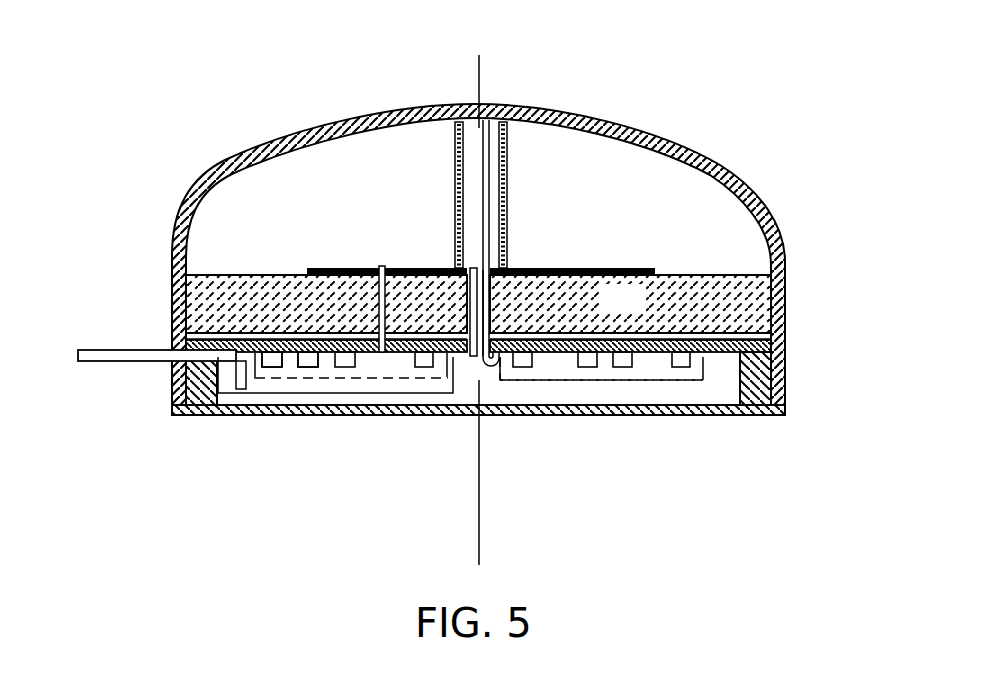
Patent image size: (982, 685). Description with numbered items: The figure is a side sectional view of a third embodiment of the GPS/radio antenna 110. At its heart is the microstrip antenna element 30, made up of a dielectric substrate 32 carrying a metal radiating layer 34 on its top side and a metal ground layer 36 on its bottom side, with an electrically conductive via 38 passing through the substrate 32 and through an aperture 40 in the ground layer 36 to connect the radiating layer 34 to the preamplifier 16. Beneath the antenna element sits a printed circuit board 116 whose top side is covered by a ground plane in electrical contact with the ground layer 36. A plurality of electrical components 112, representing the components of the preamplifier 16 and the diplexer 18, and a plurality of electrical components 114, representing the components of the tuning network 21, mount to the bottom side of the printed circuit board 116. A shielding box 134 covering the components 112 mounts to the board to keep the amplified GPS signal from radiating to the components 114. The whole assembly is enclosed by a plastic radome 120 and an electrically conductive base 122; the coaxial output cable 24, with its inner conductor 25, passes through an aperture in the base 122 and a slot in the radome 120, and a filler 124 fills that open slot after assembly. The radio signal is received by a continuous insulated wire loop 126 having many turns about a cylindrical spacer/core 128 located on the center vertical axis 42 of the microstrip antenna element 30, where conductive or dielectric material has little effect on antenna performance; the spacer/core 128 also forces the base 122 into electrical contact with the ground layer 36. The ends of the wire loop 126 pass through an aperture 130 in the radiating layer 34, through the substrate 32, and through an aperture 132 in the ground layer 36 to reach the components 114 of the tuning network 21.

The GPS/radio antenna 110 is at (783, 108).
The plastic radome 120 is at (197, 188).
The electrically conductive base 122 is at (195, 415).
The filler 124 is at (170, 397).
The microstrip antenna element 30 is at (788, 270).
The dielectric substrate 32 is at (640, 311).
The metal ground layer 36 is at (788, 310).
The printed circuit board 116 is at (770, 355).
The metal radiating layer 34 is at (340, 270).
The electrically conductive via 38 is at (313, 267).
The aperture 40 is at (382, 308).
The cylindrical spacer/core 128 is at (460, 137).
The insulated wire loop 126 is at (530, 108).
The aperture 130 is at (502, 250).
The aperture 132 is at (519, 286).
The coaxial output cable 24 is at (125, 363).
The inner conductor 25 is at (240, 362).
The shielding box 134 is at (433, 393).
The electrical components 112 is at (420, 367).
The preamplifier 16 is at (276, 367).
The diplexer 18 is at (308, 359).
The electrical components 114 is at (680, 373).
The tuning network 21 is at (512, 383).
The center vertical axis 42 is at (470, 542).